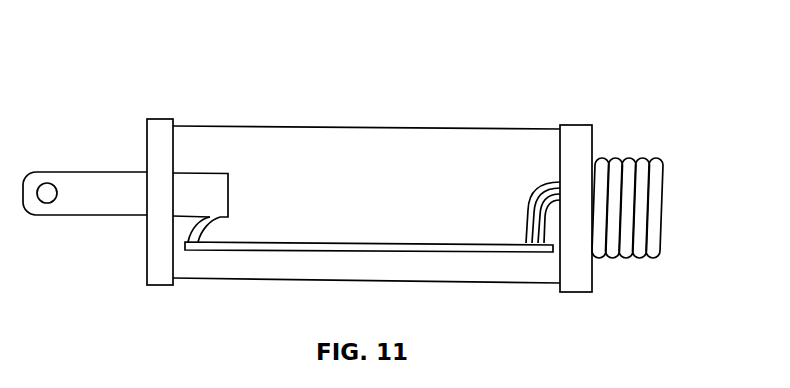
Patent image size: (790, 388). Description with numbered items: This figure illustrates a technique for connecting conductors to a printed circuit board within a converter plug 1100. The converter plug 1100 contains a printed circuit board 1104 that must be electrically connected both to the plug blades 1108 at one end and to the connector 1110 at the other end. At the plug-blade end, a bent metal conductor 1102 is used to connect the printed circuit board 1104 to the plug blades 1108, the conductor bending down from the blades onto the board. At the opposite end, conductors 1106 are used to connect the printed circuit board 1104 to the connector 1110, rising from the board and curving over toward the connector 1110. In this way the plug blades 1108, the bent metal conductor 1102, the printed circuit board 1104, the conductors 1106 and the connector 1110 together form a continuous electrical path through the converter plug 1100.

The converter plug 1100 is at (364, 89).
The bent metal conductor 1102 is at (207, 229).
The printed circuit board 1104 is at (273, 251).
The conductors 1106 is at (528, 200).
The plug blades 1108 is at (78, 172).
The connector 1110 is at (612, 158).